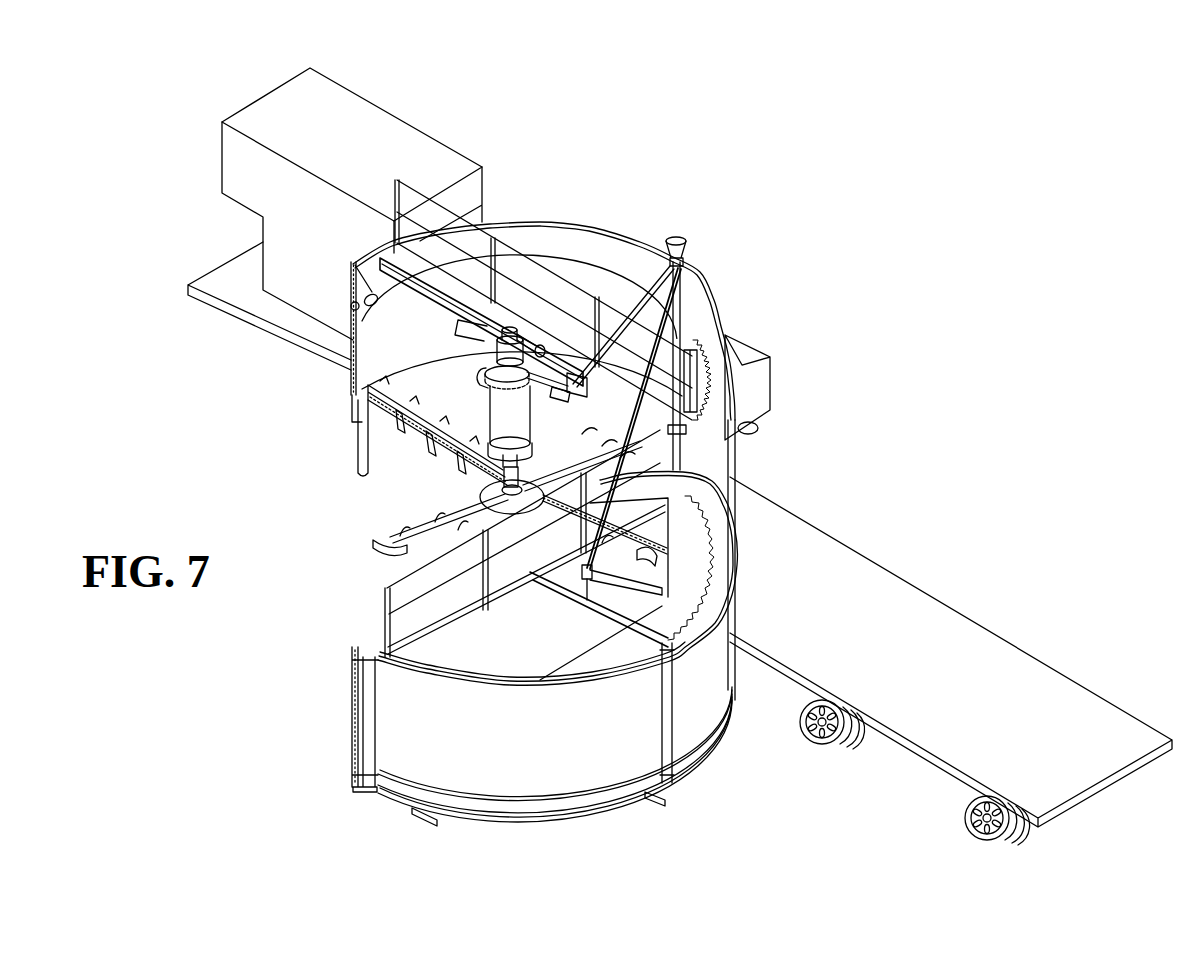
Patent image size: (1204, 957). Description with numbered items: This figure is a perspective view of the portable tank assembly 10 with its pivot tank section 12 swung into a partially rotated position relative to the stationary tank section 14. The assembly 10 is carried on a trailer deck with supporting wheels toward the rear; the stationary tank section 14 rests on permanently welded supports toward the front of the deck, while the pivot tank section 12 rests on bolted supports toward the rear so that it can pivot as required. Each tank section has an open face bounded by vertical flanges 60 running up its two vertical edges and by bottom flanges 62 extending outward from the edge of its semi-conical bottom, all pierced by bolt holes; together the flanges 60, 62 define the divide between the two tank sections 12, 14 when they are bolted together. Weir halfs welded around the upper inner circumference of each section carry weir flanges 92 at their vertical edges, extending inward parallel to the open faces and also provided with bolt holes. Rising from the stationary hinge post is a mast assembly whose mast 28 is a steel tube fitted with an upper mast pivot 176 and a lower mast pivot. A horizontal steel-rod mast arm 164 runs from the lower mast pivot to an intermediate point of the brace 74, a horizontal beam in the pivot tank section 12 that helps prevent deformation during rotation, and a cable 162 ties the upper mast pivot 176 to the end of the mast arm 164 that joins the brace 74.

The portable tank assembly 10 is at (572, 101).
The pivot tank section 12 is at (495, 753).
The stationary tank section 14 is at (557, 222).
The mast 28 is at (688, 247).
The vertical flanges 60 is at (348, 350).
The bottom flanges 62 is at (410, 437).
The brace 74 is at (622, 632).
The weir flanges 92 is at (352, 312).
The cable 162 is at (667, 331).
The mast arm 164 is at (738, 496).
The upper mast pivot 176 is at (690, 272).